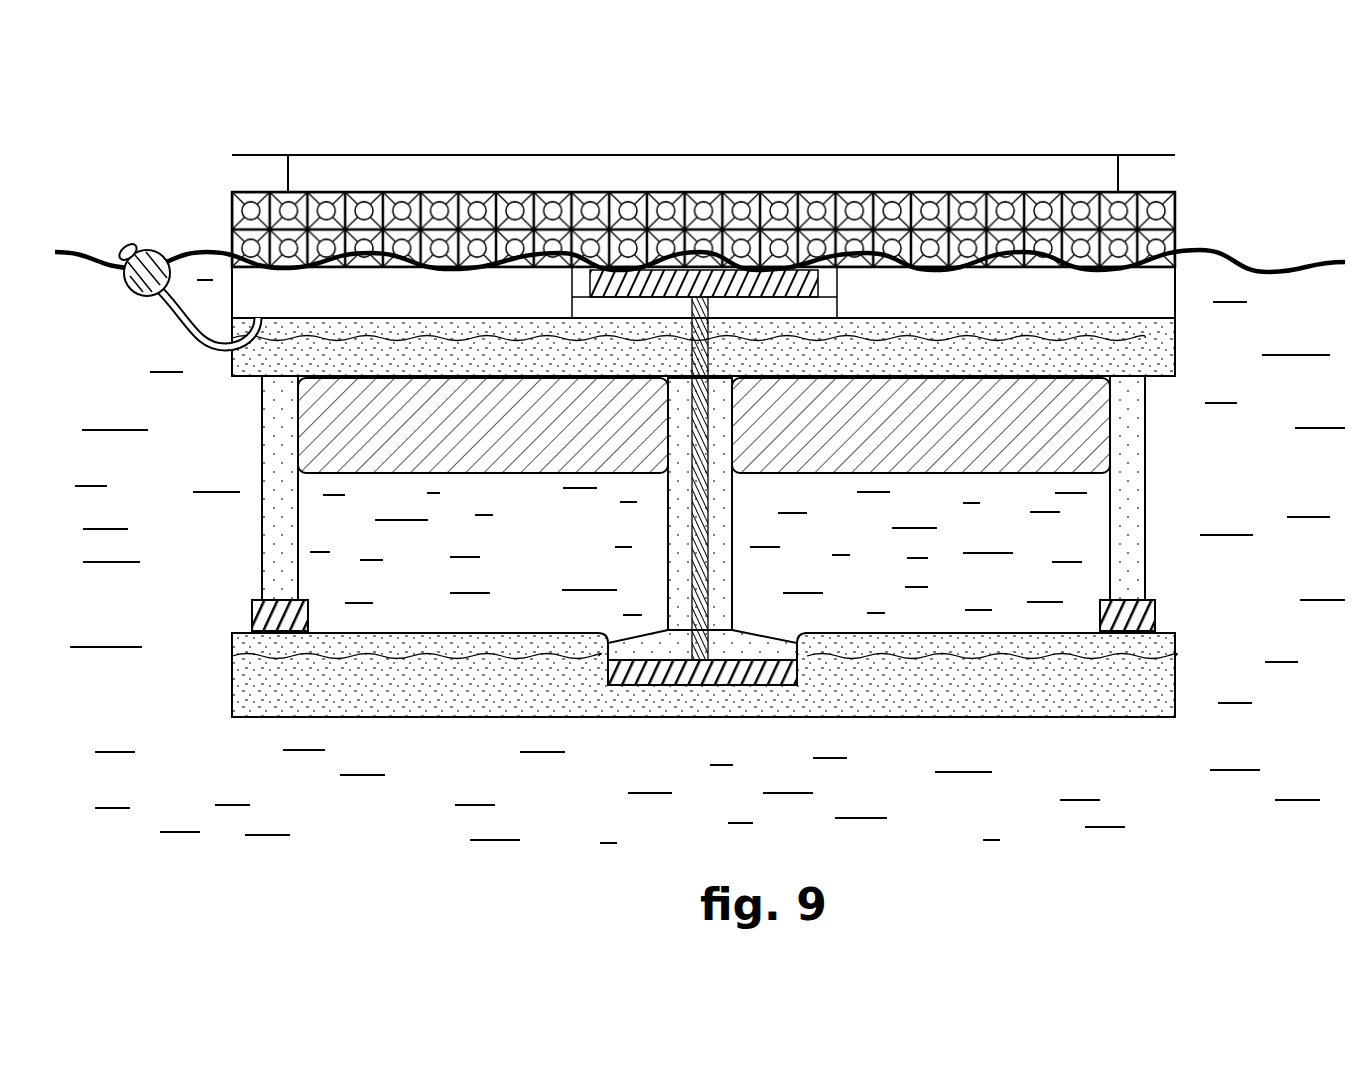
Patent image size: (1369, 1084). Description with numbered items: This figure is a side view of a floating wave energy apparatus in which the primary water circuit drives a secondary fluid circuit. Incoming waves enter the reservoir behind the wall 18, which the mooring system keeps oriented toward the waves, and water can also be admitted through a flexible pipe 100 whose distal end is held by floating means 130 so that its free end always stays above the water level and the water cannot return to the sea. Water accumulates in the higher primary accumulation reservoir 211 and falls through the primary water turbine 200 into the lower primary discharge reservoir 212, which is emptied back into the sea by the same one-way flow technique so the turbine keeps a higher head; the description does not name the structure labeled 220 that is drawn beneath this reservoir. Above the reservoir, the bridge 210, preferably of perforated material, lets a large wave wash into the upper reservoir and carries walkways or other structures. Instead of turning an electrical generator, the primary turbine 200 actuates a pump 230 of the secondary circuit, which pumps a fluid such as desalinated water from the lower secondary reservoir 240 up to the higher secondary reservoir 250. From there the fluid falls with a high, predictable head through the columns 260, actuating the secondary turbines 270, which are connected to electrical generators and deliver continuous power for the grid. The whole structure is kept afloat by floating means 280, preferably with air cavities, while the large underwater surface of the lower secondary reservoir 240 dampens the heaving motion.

The wall 18 is at (238, 213).
The flexible pipe 100 is at (173, 313).
The floating means 130 is at (145, 260).
The primary water turbine 200 is at (812, 283).
The bridge 210 is at (955, 152).
The primary accumulation reservoir 211 is at (1178, 218).
The primary discharge reservoir 212 is at (1130, 293).
The upper platform 220 is at (232, 347).
The pump 230 is at (778, 685).
The lower secondary reservoir 240 is at (232, 673).
The higher secondary reservoir 250 is at (263, 373).
The columns 260 is at (260, 535).
The secondary turbines 270 is at (252, 613).
The floating means 280 is at (855, 476).